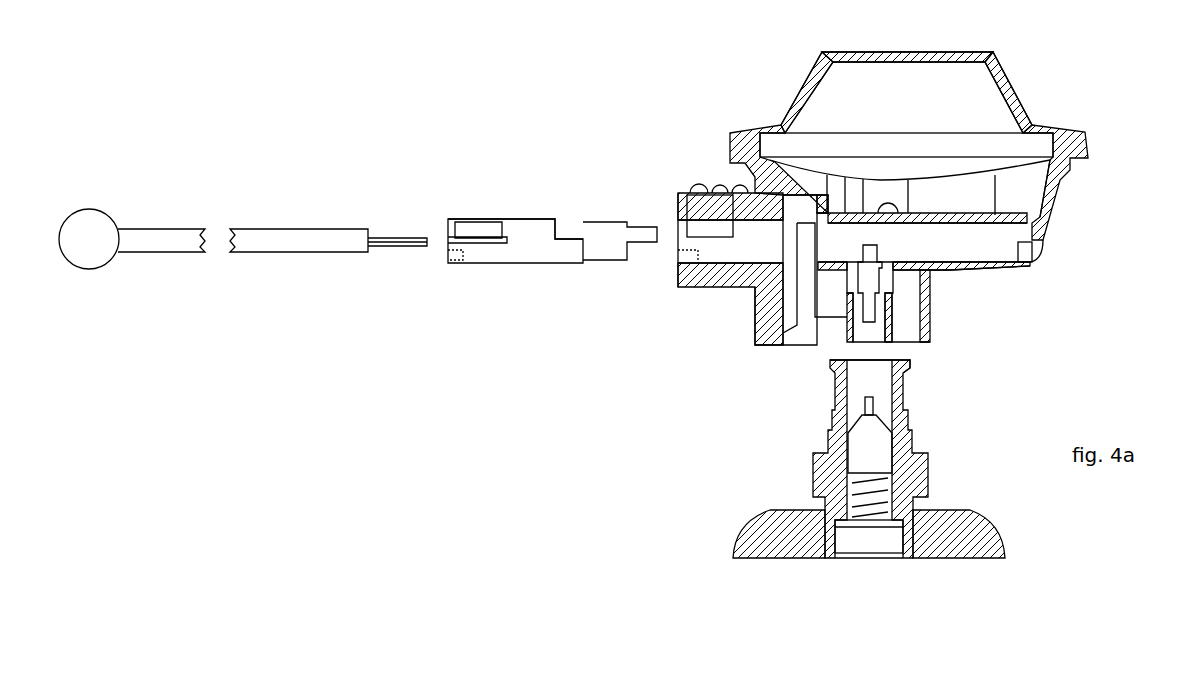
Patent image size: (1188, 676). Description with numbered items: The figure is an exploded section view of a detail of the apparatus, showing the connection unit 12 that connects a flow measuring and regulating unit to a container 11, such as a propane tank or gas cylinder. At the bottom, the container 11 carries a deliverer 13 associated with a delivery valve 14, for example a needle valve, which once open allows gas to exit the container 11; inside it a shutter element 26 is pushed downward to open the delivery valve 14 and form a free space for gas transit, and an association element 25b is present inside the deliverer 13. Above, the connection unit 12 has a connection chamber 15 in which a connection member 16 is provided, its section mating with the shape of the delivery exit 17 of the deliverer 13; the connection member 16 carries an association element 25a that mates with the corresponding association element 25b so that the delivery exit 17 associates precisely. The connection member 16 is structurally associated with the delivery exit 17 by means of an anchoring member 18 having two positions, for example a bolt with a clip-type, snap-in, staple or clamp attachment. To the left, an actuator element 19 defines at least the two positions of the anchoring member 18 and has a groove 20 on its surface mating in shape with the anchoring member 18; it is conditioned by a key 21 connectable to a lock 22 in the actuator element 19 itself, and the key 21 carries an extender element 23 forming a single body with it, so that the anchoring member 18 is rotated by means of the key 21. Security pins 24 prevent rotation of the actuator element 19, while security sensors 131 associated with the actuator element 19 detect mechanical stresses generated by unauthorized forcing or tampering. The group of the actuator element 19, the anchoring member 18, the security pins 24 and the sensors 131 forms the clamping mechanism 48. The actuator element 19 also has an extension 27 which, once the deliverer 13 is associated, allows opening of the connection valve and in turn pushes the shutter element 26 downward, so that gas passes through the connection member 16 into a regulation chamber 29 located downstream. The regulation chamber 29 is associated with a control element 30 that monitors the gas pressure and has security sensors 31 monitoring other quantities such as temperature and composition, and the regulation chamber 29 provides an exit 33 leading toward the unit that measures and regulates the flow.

The container 11 is at (972, 542).
The connection unit 12 is at (712, 64).
The deliverer 13 is at (872, 540).
The delivery valve 14 is at (910, 458).
The connection chamber 15 is at (918, 312).
The connection member 16 is at (855, 330).
The delivery exit 17 is at (891, 362).
The anchoring member 18 is at (805, 333).
The actuator element 19 is at (529, 250).
The groove 20 is at (558, 232).
The key 21 is at (386, 240).
The lock 22 is at (478, 240).
The extender element 23 is at (230, 241).
The security pins 24 is at (696, 206).
The association element 25a is at (870, 313).
The association element 25b is at (870, 407).
The shutter element 26 is at (862, 447).
The extension 27 is at (637, 233).
The regulation chamber 29 is at (997, 223).
The control element 30 is at (972, 97).
The security sensors 31 is at (1024, 252).
The exit 33 is at (700, 190).
The clamping mechanism 48 is at (617, 302).
The security sensors 131 is at (455, 256).